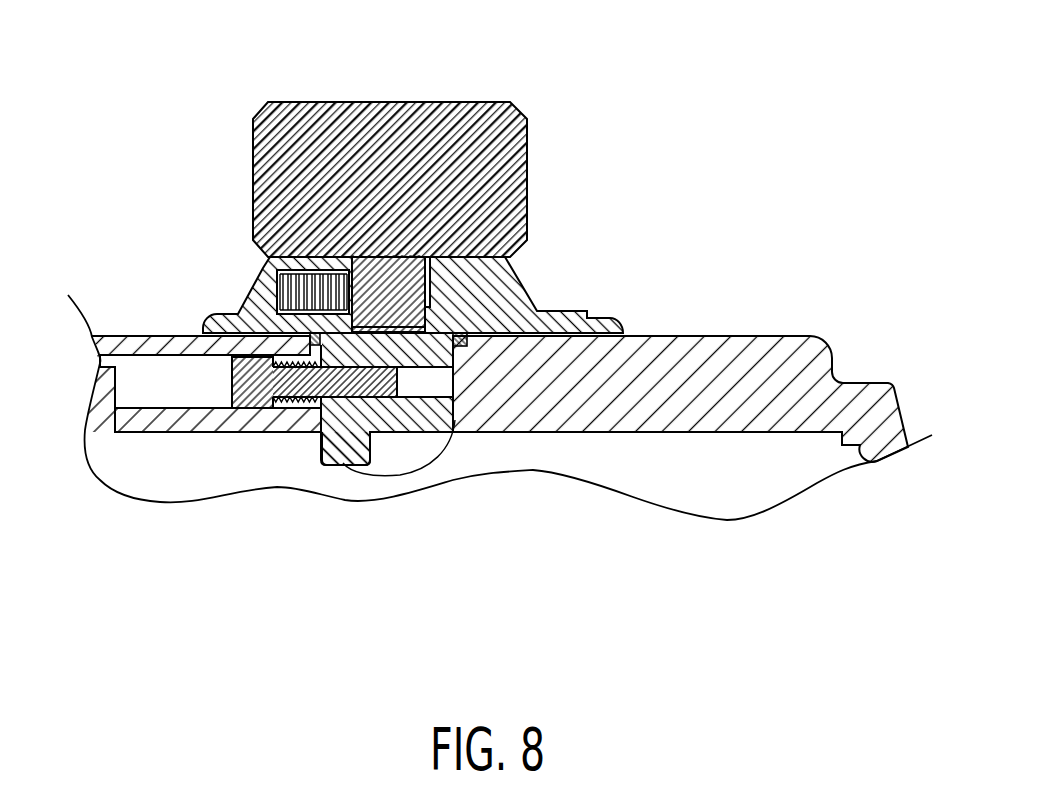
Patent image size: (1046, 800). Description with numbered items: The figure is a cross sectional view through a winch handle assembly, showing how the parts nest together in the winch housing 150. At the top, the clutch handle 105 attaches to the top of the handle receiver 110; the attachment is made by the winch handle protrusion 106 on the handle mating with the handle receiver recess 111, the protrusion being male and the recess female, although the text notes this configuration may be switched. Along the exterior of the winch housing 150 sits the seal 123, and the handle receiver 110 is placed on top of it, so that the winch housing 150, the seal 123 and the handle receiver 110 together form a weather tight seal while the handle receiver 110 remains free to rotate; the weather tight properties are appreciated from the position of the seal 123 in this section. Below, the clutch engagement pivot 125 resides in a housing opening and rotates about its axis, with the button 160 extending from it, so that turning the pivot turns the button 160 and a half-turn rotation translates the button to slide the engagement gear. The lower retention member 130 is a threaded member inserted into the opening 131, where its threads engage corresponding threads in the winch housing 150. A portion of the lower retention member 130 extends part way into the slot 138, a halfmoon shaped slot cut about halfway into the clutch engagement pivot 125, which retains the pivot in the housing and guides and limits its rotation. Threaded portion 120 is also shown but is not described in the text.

The clutch handle 105 is at (527, 157).
The handle receiver 110 is at (513, 270).
The handle receiver recess 111 is at (370, 327).
The winch handle protrusion 106 is at (402, 302).
The threaded portion 120 is at (277, 297).
The winch housing 150 is at (818, 337).
The slot 138 is at (435, 385).
The seal 123 is at (468, 340).
The clutch engagement pivot 125 is at (411, 422).
The button 160 is at (332, 450).
The lower retention member 130 is at (245, 385).
The opening 131 is at (160, 390).